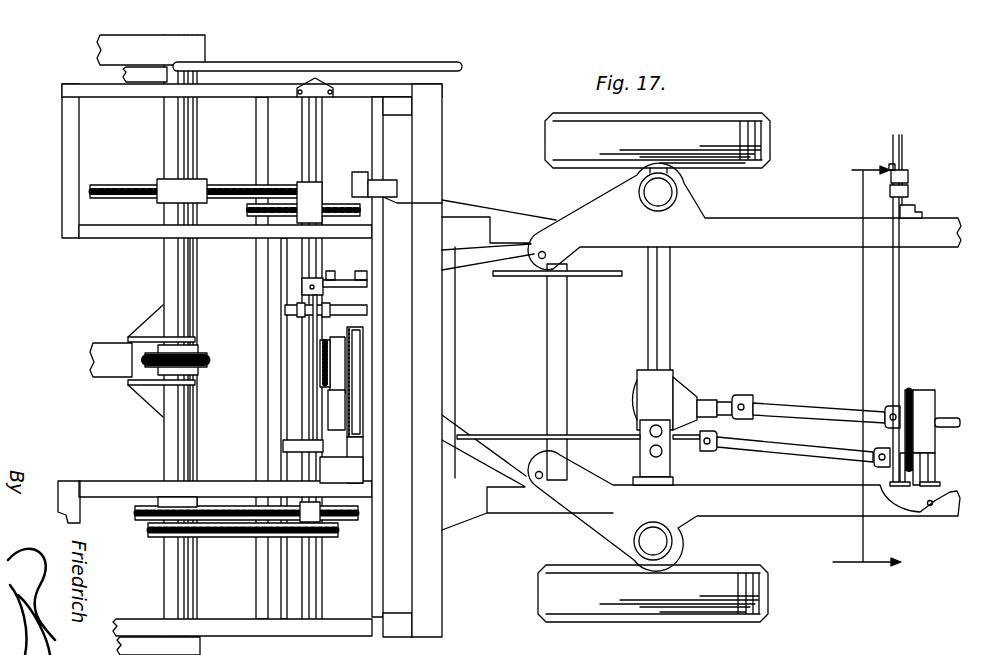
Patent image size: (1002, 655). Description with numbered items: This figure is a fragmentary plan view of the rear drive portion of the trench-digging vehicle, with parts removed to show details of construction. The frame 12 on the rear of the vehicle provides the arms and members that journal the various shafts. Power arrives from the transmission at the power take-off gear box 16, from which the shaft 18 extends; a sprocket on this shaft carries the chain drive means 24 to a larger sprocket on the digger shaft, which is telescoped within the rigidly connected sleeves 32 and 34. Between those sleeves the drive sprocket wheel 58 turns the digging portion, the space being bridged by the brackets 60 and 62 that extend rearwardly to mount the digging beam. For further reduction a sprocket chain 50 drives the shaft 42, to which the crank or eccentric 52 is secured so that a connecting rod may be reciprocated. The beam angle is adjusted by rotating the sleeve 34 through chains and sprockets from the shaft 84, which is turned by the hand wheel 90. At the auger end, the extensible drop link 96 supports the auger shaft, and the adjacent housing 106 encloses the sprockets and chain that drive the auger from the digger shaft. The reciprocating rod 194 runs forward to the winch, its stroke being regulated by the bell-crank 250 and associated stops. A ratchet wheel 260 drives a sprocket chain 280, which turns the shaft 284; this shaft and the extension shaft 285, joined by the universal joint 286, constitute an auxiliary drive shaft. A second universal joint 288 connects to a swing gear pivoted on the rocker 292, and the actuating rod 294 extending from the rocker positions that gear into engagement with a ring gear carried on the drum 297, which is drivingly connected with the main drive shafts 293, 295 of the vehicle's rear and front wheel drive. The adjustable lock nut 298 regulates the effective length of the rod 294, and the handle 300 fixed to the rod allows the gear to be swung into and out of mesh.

The frame 12 is at (450, 155).
The power take-off gear box 16 is at (320, 358).
The shaft 18 is at (863, 363).
The chain drive means 24 is at (257, 229).
The sleeve 32 is at (193, 451).
The sleeve 34 is at (188, 301).
The shaft 42 is at (330, 388).
The sprocket chain 50 is at (230, 185).
The crank or eccentric 52 is at (316, 281).
The drive sprocket wheel 58 is at (204, 359).
The bracket 60 is at (146, 397).
The bracket 62 is at (150, 327).
The shaft 84 is at (316, 132).
The hand wheel 90 is at (463, 71).
The drop link 96 is at (137, 84).
The housing 106 is at (92, 52).
The reciprocating rod 194 is at (598, 280).
The bell-crank 250 is at (343, 272).
The ratchet wheel 260 is at (355, 406).
The sprocket chain 280 is at (365, 371).
The shaft 284 is at (584, 435).
The extension shaft 285 is at (772, 450).
The universal joint 286 is at (711, 448).
The second universal joint 288 is at (878, 452).
The rocker 292 is at (893, 473).
The main drive shaft 293 is at (807, 406).
The actuating rod 294 is at (895, 349).
The main drive shaft 295 is at (960, 420).
The drum 297 is at (953, 384).
The adjustable lock nut 298 is at (905, 192).
The handle 300 is at (906, 142).